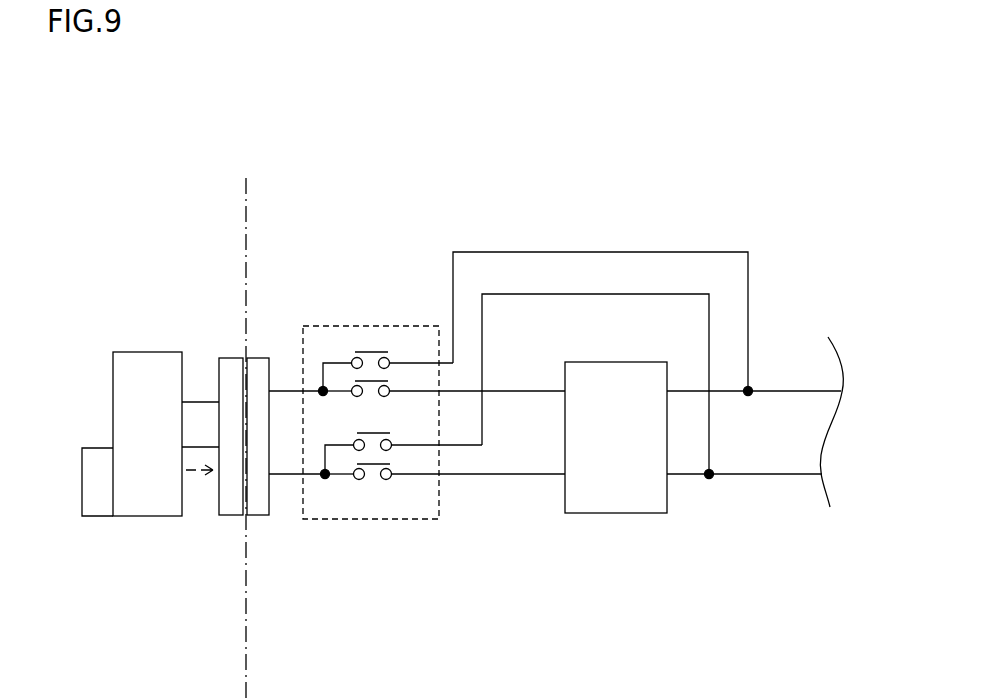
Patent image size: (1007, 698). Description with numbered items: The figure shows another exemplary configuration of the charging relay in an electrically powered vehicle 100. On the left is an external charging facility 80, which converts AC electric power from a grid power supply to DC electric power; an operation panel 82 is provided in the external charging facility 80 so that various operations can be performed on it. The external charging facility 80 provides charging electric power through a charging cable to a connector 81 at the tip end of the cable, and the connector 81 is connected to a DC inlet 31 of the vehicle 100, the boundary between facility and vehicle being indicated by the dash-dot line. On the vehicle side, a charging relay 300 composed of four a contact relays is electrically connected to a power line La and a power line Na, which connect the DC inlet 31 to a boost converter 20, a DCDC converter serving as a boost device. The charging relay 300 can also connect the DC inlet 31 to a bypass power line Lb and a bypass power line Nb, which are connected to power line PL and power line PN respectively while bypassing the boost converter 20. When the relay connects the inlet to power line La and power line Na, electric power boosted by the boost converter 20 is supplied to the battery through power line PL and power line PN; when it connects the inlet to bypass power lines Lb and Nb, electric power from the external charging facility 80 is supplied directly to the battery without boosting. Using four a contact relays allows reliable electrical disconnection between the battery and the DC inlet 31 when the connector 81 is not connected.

The electrically powered vehicle 100 is at (819, 92).
The external charging facility 80 is at (132, 352).
The operation panel 82 is at (77, 512).
The connector 81 is at (217, 508).
The DC inlet 31 is at (258, 358).
The charging relay 300 is at (343, 326).
The boost converter 20 is at (638, 362).
The power line La is at (502, 391).
The power line Na is at (505, 474).
The bypass power line Lb is at (556, 252).
The bypass power line Nb is at (581, 294).
The power line PL is at (764, 391).
The power line PN is at (736, 474).